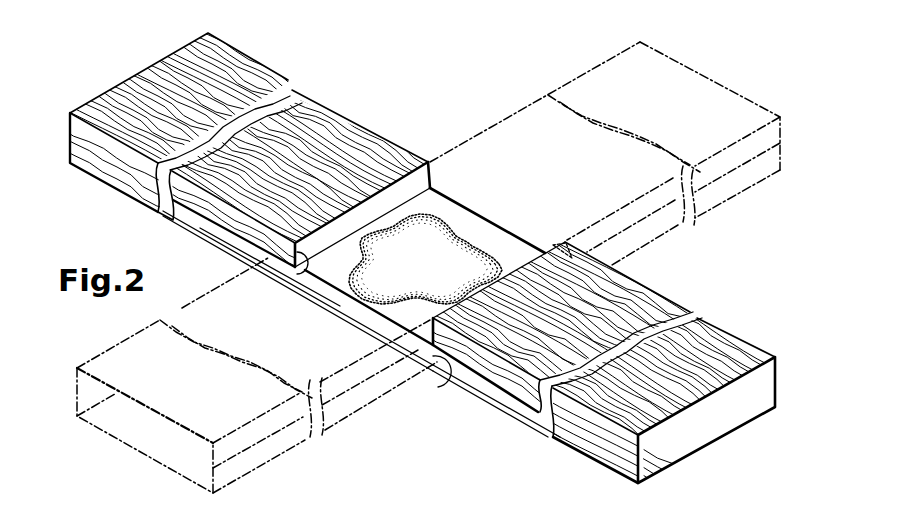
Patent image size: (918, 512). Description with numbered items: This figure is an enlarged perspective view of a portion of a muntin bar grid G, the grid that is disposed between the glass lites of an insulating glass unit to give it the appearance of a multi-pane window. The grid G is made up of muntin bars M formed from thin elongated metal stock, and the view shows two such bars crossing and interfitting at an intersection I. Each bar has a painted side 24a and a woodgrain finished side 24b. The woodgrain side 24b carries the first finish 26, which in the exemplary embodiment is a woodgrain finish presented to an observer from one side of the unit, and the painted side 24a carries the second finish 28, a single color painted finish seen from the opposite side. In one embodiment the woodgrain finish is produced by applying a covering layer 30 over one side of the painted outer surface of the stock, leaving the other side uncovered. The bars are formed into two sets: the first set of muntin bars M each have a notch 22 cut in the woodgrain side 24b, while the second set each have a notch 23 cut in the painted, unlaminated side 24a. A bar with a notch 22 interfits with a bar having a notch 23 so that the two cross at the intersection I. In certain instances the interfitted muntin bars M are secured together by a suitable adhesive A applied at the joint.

The muntin bar M is at (217, 83).
The woodgrain finished side 24b is at (345, 126).
The painted side 24a is at (495, 418).
The notch 22 is at (300, 281).
The notch 23 is at (447, 377).
The covering layer 30 is at (630, 287).
The first finish 26 is at (730, 358).
The second finish 28 is at (703, 447).
The adhesive A is at (425, 264).
The intersection I is at (439, 124).
The muntin bar grid G is at (502, 84).